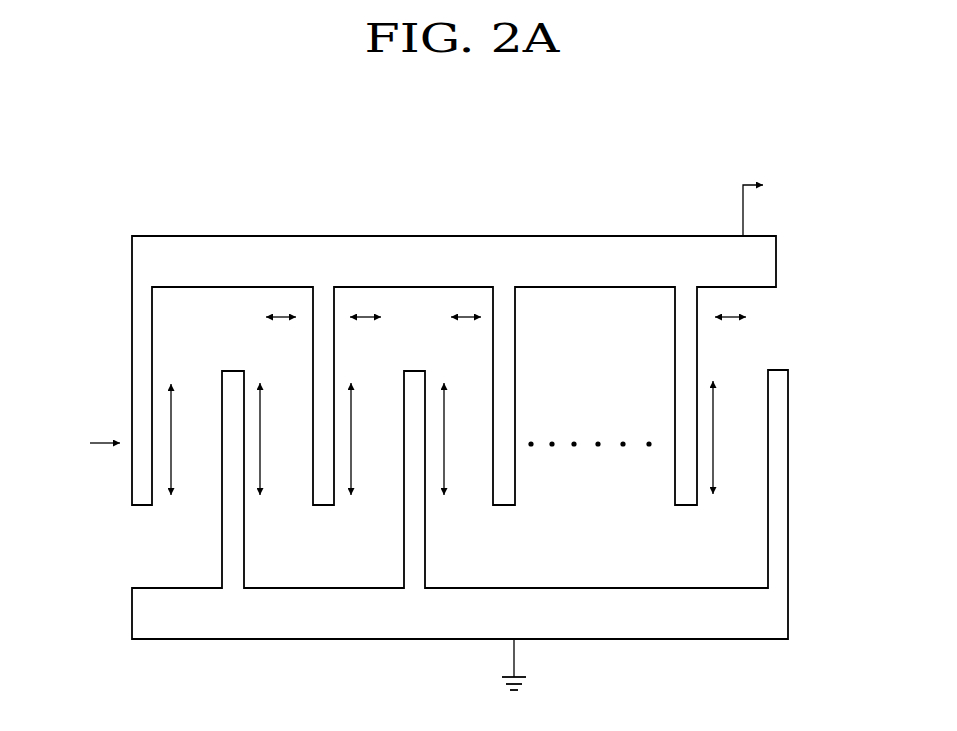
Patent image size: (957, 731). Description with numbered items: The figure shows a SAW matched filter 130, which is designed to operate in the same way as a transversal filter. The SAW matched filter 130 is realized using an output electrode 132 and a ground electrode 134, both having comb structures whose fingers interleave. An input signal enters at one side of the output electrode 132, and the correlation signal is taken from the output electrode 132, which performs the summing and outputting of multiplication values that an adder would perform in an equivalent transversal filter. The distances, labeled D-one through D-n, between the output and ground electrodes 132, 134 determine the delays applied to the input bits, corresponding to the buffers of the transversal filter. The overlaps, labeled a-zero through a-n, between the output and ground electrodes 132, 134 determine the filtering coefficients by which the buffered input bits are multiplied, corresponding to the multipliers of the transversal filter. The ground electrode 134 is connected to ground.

The SAW matched filter 130 is at (427, 166).
The output electrode 132 is at (316, 236).
The ground electrode 134 is at (328, 640).